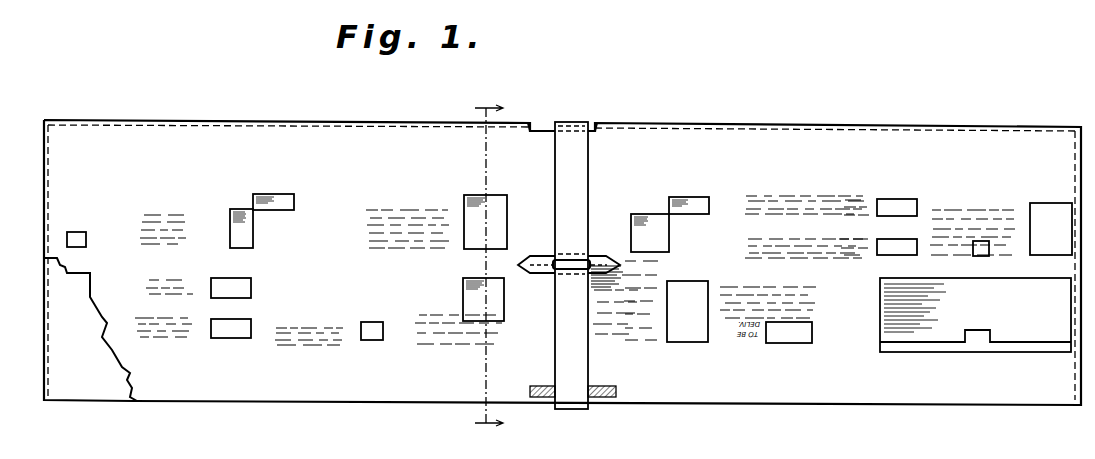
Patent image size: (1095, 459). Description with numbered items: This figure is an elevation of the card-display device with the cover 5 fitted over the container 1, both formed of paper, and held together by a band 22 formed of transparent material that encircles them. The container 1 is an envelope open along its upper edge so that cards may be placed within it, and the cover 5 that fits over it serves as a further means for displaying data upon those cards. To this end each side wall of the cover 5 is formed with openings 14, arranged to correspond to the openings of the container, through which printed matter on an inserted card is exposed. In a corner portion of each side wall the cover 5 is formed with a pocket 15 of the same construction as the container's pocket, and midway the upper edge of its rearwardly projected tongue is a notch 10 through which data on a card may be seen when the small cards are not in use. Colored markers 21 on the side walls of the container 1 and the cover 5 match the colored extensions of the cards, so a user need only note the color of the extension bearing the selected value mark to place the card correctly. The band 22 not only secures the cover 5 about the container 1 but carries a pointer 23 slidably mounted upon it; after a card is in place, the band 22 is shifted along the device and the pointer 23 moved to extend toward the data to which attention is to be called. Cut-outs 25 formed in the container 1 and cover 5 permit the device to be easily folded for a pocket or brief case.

The container 1 is at (562, 244).
The cover 5 is at (393, 423).
The notch 10 is at (992, 332).
The openings 14 is at (279, 210).
The pocket 15 is at (880, 328).
The markers 21 is at (607, 398).
The band 22 is at (578, 185).
The pointer 23 is at (535, 262).
The cut-outs 25 is at (551, 100).